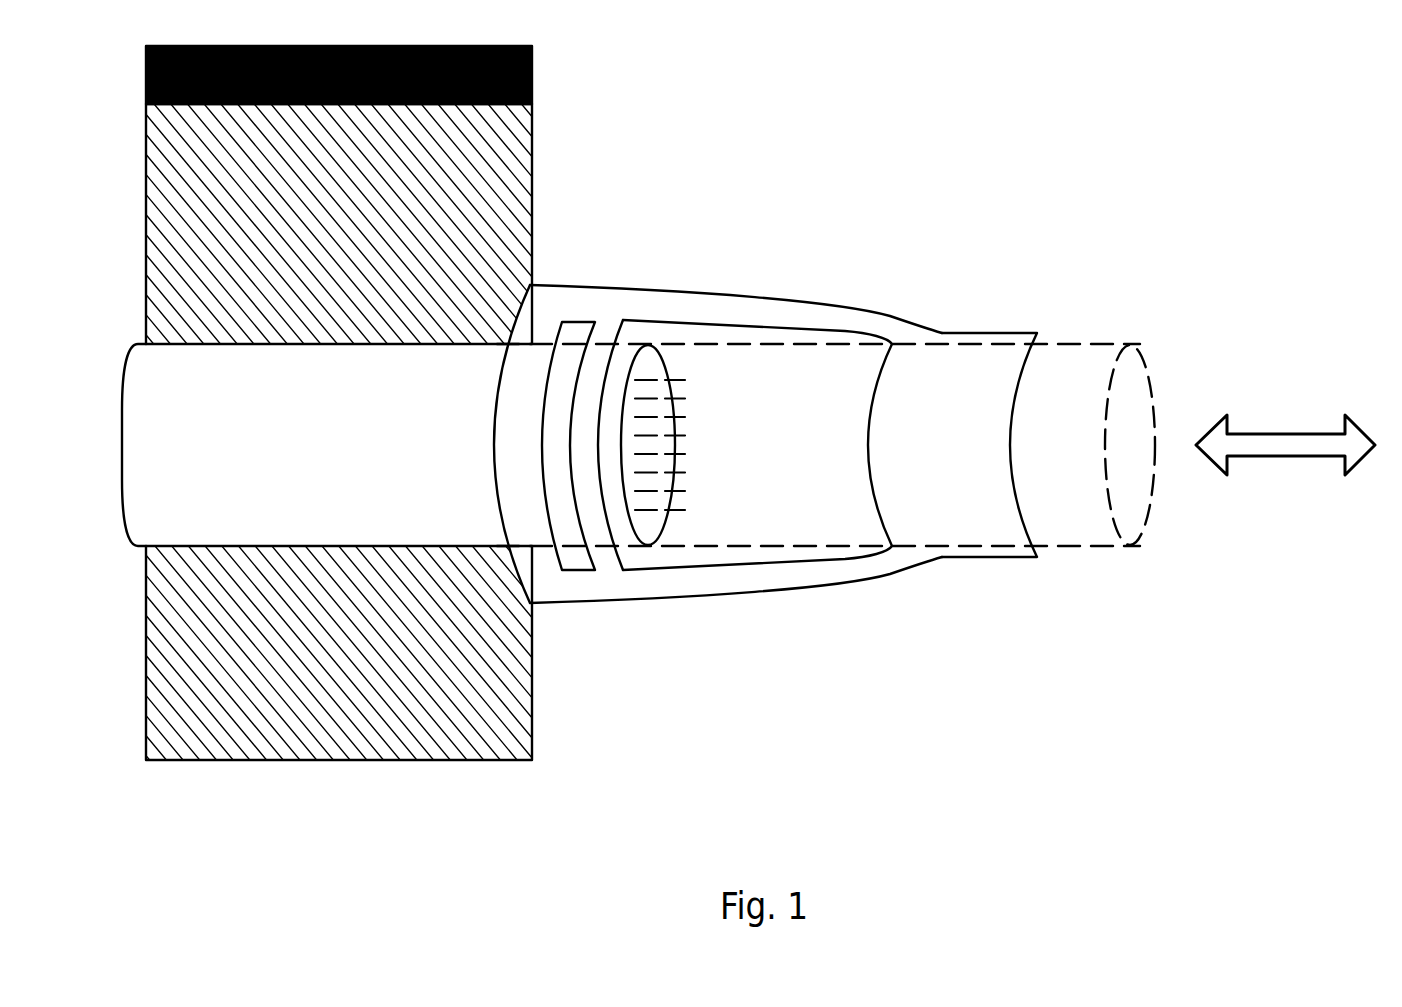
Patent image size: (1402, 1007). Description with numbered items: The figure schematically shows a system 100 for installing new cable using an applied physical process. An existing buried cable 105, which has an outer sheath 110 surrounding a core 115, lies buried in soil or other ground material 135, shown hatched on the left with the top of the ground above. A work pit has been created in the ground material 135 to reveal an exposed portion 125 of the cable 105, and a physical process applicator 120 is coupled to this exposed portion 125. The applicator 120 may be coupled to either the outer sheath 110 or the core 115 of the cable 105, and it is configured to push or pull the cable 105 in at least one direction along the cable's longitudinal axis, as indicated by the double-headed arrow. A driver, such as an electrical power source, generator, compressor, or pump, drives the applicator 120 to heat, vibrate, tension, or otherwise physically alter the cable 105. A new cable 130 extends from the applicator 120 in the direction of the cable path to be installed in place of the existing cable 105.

The system 100 is at (1187, 855).
The existing buried cable 105 is at (145, 530).
The outer sheath 110 is at (767, 346).
The core 115 is at (697, 370).
The physical process applicator 120 is at (865, 305).
The exposed portion 125 is at (668, 607).
The new cable 130 is at (1087, 344).
The ground material 135 is at (148, 163).